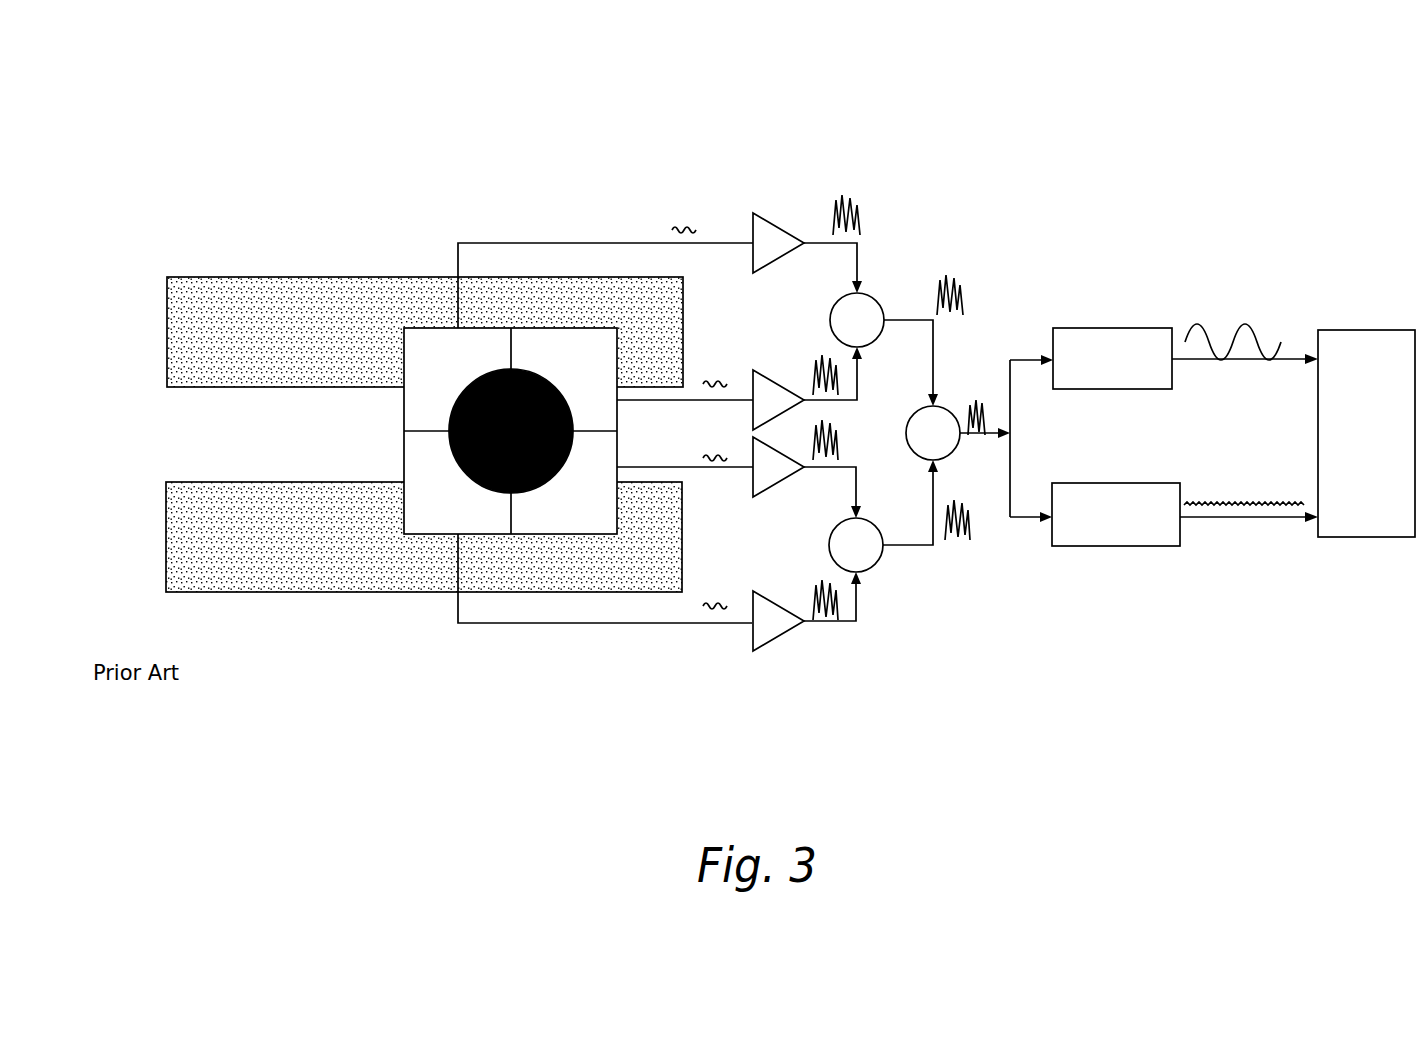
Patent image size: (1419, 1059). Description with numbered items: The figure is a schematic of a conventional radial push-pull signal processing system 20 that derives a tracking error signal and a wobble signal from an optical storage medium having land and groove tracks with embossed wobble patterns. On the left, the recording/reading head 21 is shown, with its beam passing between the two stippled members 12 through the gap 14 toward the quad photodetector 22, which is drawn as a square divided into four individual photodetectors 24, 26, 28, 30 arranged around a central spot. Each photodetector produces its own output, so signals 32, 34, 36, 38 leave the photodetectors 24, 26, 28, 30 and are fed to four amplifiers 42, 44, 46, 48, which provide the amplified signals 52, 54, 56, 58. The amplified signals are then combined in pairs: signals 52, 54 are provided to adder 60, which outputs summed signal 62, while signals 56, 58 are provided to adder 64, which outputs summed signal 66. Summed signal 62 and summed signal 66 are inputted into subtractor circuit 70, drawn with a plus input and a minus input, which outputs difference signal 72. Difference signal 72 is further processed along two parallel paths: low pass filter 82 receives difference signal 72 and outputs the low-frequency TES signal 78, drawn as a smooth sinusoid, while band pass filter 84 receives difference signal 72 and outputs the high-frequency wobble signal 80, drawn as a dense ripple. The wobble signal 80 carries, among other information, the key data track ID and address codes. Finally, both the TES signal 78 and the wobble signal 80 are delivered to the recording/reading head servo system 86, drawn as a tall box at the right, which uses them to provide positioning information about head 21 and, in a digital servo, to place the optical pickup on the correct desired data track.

The pole pieces 12 is at (262, 297).
The gap 14 is at (203, 446).
The signal processing system 20 is at (903, 110).
The recording/reading head 21 is at (333, 448).
The quad photodetector 22 is at (395, 415).
The photodetector 24 is at (471, 449).
The photodetector 26 is at (588, 362).
The photodetector 28 is at (588, 518).
The photodetector 30 is at (427, 522).
The signal 32 is at (690, 222).
The signal 34 is at (717, 380).
The signal 36 is at (720, 455).
The signal 38 is at (720, 600).
The amplifier 42 is at (778, 226).
The amplifier 44 is at (778, 382).
The amplifier 46 is at (778, 486).
The amplifier 48 is at (778, 606).
The signal 52 is at (847, 195).
The signal 54 is at (818, 357).
The signal 56 is at (838, 425).
The signal 58 is at (822, 584).
The adder 60 is at (880, 305).
The summed signal 62 is at (960, 295).
The adder 64 is at (878, 560).
The summed signal 66 is at (965, 533).
The subtractor circuit 70 is at (945, 455).
The difference signal 72 is at (972, 398).
The TES signal 78 is at (1210, 335).
The wobble signal 80 is at (1210, 505).
The low pass filter 82 is at (1118, 328).
The band pass filter 84 is at (1108, 546).
The recording/reading head servo system 86 is at (1356, 330).